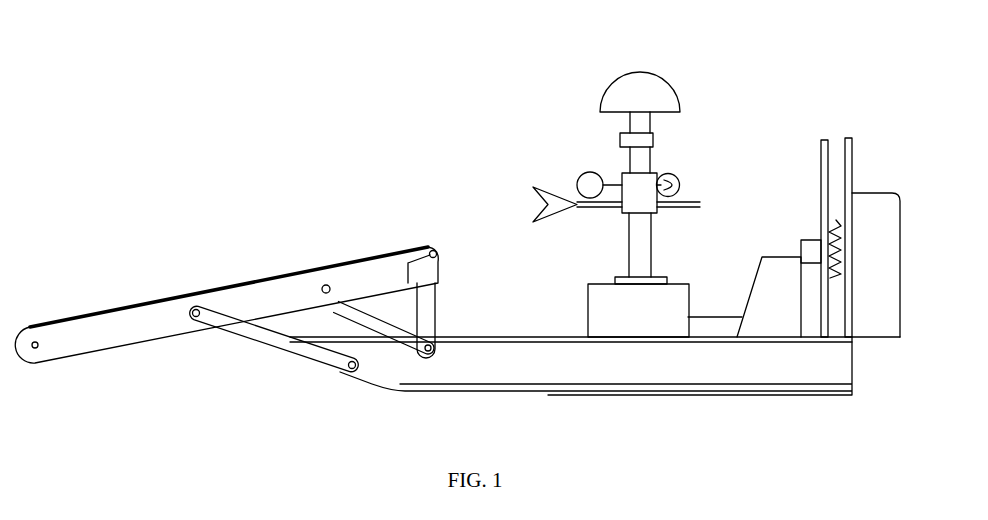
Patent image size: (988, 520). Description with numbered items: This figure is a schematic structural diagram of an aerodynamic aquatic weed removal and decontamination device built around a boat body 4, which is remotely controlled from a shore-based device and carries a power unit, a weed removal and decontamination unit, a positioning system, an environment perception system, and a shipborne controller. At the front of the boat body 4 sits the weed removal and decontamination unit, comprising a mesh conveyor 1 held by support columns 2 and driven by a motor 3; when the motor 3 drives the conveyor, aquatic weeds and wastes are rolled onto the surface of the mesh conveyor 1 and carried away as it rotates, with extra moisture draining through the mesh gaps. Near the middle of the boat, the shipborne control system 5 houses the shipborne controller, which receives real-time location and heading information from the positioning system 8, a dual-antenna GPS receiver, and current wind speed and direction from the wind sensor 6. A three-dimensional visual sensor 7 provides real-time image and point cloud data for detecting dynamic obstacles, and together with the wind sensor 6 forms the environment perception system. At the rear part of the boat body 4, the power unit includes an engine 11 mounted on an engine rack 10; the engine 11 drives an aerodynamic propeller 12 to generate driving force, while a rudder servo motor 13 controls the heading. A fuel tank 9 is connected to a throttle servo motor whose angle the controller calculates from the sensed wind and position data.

The mesh conveyor 1 is at (273, 278).
The support columns 2 is at (370, 313).
The motor 3 is at (421, 264).
The boat body 4 is at (507, 352).
The shipborne control system 5 is at (610, 317).
The wind sensor 6 is at (635, 200).
The three-dimensional visual sensor 7 is at (637, 138).
The positioning system 8 is at (660, 100).
The fuel tank 9 is at (720, 328).
The engine rack 10 is at (780, 283).
The engine 11 is at (810, 242).
The aerodynamic propeller 12 is at (836, 220).
The rudder servo motor 13 is at (882, 240).